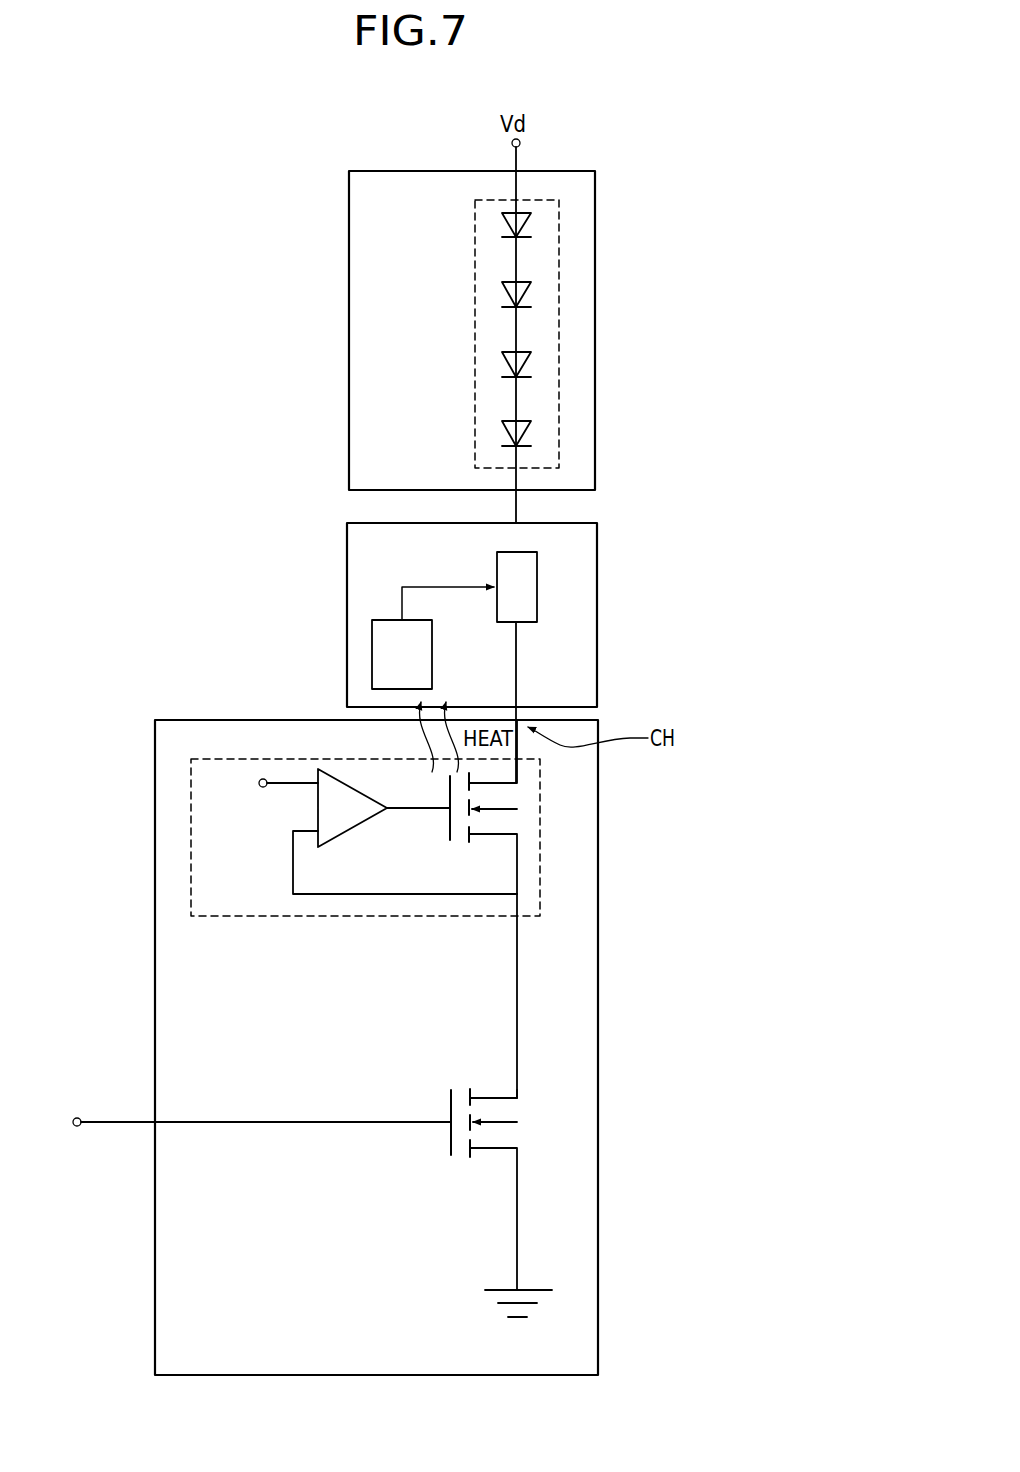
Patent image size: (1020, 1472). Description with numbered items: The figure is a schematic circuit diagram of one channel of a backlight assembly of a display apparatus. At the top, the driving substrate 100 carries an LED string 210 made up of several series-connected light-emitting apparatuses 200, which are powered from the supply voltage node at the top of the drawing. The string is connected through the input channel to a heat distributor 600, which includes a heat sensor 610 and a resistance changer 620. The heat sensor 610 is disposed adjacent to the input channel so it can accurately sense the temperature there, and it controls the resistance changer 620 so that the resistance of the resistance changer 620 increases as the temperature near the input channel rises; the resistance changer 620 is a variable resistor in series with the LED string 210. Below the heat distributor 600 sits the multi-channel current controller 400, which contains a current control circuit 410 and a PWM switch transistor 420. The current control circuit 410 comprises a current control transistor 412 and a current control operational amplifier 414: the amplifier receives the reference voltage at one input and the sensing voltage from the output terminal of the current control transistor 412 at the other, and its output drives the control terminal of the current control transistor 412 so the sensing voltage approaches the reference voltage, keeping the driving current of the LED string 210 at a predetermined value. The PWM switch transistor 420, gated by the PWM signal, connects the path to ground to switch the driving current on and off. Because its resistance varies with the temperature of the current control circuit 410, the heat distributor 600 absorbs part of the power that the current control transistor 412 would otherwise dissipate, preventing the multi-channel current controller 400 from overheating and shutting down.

The driving substrate 100 is at (595, 267).
The light-emitting apparatus 200 is at (541, 217).
The LED string 210 is at (559, 327).
The multi-channel current controller 400 is at (598, 988).
The current control circuit 410 is at (439, 818).
The current control transistor 412 is at (528, 812).
The current control operational amplifier 414 is at (353, 828).
The PWM switch transistor 420 is at (458, 1170).
The heat distributor 600 is at (347, 598).
The heat sensor 610 is at (372, 653).
The resistance changer 620 is at (537, 587).